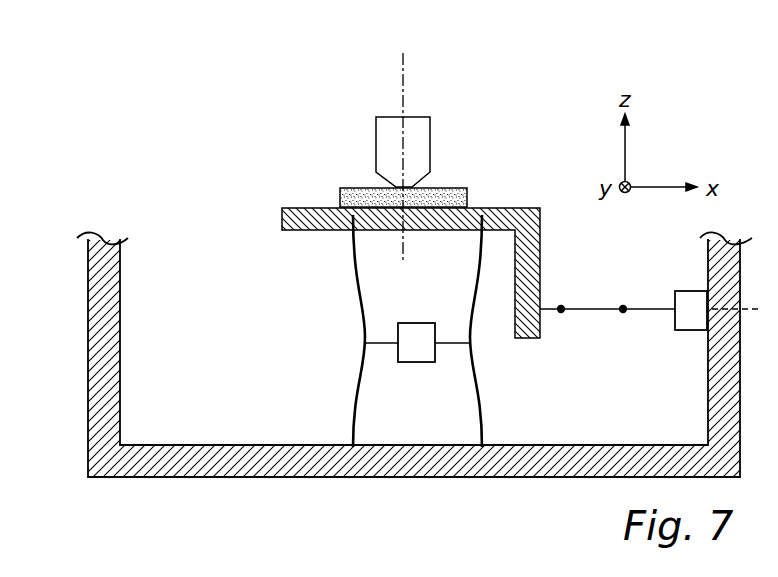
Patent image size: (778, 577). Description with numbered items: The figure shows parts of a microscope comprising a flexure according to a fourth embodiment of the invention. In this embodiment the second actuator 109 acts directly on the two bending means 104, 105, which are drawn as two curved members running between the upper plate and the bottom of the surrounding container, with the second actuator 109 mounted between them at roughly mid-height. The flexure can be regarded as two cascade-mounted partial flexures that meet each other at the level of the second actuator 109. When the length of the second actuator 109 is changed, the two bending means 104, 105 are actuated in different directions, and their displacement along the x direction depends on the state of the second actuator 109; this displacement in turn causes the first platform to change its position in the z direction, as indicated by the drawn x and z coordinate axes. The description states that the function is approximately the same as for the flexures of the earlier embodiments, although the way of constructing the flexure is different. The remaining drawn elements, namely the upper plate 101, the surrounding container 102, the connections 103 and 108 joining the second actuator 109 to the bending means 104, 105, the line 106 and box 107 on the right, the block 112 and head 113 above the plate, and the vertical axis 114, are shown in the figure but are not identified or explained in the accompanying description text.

The support plate / holder 101 is at (523, 208).
The container 102 is at (418, 478).
The left electrical lead 103 is at (388, 345).
The bending means 104 is at (363, 332).
The bending means 105 is at (482, 417).
The connecting line 106 is at (597, 307).
The connector box 107 is at (690, 291).
The right electrical lead 108 is at (455, 345).
The second actuator 109 is at (422, 323).
The sample 112 is at (340, 198).
The probe head 113 is at (430, 133).
The central axis 114 is at (403, 82).